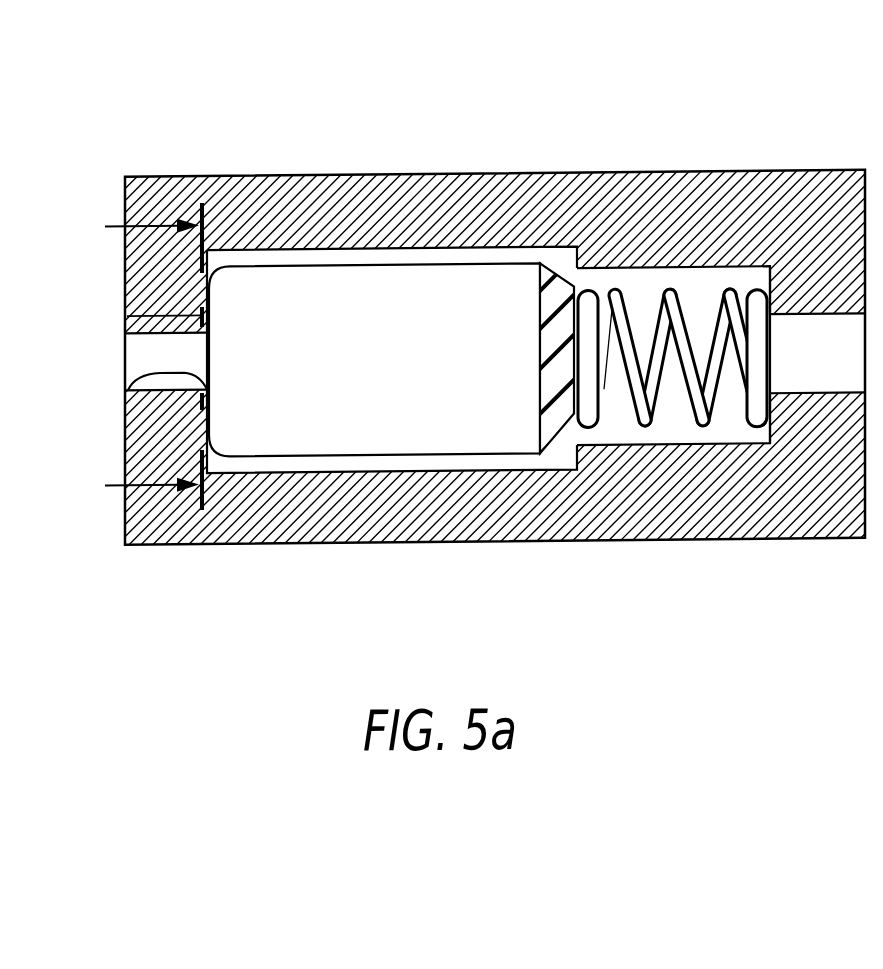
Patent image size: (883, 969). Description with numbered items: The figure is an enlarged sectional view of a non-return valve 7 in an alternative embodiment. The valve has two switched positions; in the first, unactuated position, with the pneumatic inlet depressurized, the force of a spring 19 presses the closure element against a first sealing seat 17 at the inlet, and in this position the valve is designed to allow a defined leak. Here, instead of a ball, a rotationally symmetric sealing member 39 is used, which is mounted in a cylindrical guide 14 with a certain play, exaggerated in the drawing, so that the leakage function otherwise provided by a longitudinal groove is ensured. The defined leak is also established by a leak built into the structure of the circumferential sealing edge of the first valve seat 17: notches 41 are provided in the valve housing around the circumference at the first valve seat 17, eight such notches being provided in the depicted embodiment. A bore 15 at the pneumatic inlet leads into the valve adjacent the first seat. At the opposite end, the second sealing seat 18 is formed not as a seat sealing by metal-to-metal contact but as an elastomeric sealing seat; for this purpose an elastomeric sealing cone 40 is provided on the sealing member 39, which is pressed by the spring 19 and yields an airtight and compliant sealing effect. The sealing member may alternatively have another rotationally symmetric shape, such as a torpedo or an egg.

The non-return valve 7 is at (105, 96).
The cylindrical guide 14 is at (328, 475).
The bore 15 is at (148, 354).
The first sealing seat 17 is at (127, 393).
The second sealing seat 18 is at (578, 456).
The spring 19 is at (648, 416).
The sealing member 39 is at (418, 301).
The elastomeric sealing cone 40 is at (557, 288).
The notches 41 is at (200, 318).